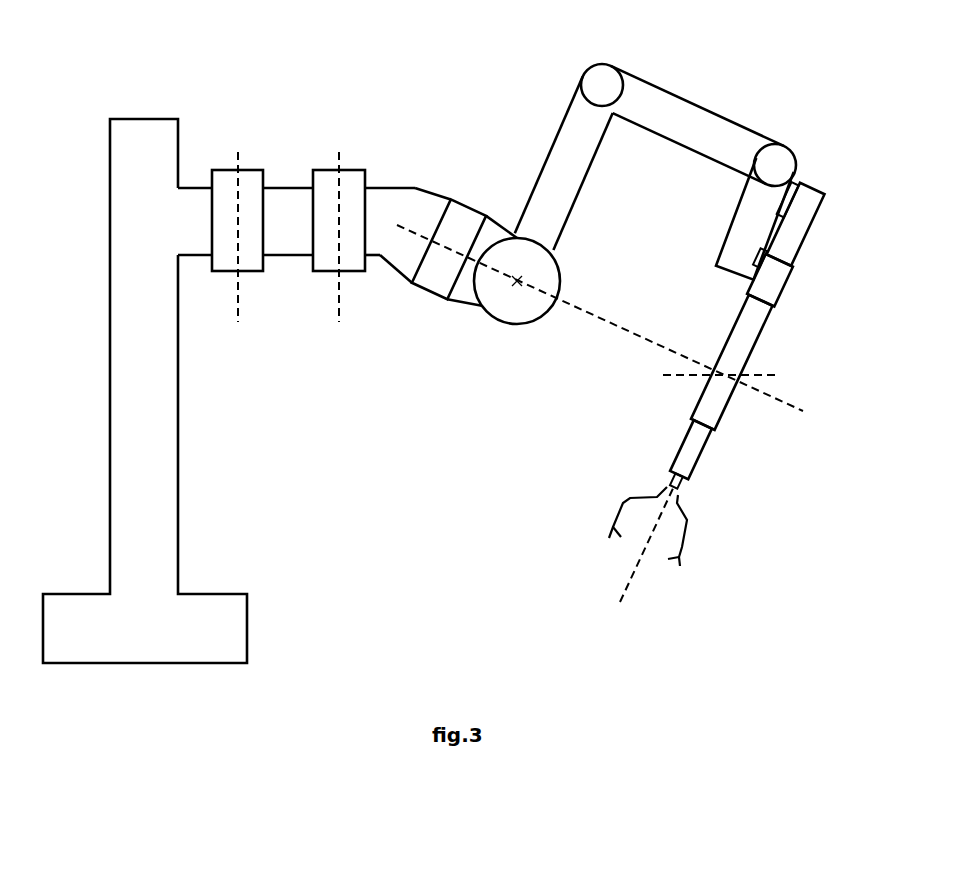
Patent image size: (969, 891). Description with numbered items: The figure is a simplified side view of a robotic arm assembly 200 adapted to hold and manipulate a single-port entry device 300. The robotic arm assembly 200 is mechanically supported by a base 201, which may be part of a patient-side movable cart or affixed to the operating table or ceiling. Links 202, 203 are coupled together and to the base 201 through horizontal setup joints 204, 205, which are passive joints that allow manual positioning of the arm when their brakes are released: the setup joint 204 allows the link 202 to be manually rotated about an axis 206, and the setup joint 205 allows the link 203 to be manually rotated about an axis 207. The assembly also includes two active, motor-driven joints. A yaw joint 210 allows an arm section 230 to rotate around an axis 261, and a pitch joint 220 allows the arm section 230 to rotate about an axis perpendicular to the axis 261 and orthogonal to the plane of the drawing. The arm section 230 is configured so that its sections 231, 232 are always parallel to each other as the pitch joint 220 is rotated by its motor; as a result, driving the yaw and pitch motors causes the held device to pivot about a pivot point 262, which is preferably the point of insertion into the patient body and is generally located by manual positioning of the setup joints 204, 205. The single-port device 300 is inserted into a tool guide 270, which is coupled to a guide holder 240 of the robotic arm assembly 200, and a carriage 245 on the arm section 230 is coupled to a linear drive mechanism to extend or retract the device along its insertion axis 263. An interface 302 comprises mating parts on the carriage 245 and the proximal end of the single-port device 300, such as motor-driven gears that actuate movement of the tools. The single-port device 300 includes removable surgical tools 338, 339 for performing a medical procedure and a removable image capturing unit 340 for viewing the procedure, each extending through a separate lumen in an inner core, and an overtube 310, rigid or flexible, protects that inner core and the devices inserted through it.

The robotic arm assembly 200 is at (431, 63).
The base 201 is at (206, 516).
The link 202 is at (290, 264).
The link 203 is at (423, 181).
The setup joint 204 is at (258, 166).
The setup joint 205 is at (359, 166).
The axis 206 is at (235, 286).
The axis 207 is at (342, 286).
The yaw joint 210 is at (478, 194).
The pitch joint 220 is at (486, 314).
The arm section 230 is at (703, 88).
The section 231 is at (578, 190).
The section 232 is at (734, 197).
The guide holder 240 is at (794, 282).
The carriage 245 is at (795, 174).
The axis 261 is at (792, 390).
The pivot point 262 is at (718, 364).
The insertion axis 263 is at (624, 577).
The tool guide 270 is at (769, 331).
The single-port entry device 300 is at (656, 421).
The interface 302 is at (808, 181).
The overtube 310 is at (666, 449).
The surgical tool 338 is at (605, 511).
The surgical tool 339 is at (695, 540).
The image capturing unit 340 is at (688, 492).